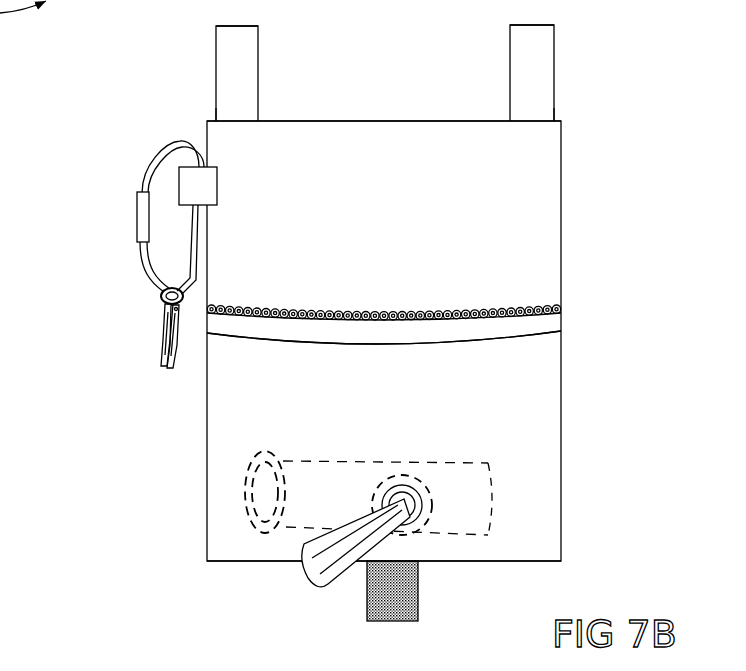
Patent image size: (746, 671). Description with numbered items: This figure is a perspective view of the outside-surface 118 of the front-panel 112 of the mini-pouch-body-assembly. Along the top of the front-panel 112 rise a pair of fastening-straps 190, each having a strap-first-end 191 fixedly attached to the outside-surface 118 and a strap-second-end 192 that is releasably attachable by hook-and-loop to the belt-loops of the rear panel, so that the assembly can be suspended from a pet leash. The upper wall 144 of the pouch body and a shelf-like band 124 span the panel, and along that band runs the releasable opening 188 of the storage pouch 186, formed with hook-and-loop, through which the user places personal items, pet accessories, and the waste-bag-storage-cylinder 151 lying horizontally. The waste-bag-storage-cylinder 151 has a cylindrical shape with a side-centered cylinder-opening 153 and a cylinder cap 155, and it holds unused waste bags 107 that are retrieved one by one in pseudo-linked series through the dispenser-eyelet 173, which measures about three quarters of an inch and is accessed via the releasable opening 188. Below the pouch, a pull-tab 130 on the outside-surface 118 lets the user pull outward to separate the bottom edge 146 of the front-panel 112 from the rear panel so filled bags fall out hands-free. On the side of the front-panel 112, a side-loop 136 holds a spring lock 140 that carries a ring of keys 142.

The front-panel 112 is at (563, 362).
The top wall 144 is at (427, 118).
The bottom edge 146 is at (250, 563).
The fastening-straps 190 is at (214, 70).
The strap-second-end 192 is at (214, 27).
The strap-first-end 191 is at (214, 117).
The shelf 124 is at (563, 320).
The releasable opening 188 is at (541, 311).
The side-loop 136 is at (175, 183).
The spring lock 140 is at (168, 147).
The ring of keys 142 is at (156, 310).
The outside-surface 118 is at (265, 393).
The storage pouch 186 is at (258, 430).
The waste-bag-storage-cylinder 151 is at (467, 518).
The cylinder cap 155 is at (244, 483).
The cylinder-opening 153 is at (436, 483).
The dispenser-eyelet 173 is at (419, 523).
The waste bag 107 is at (315, 561).
The pull-tab 130 is at (421, 618).